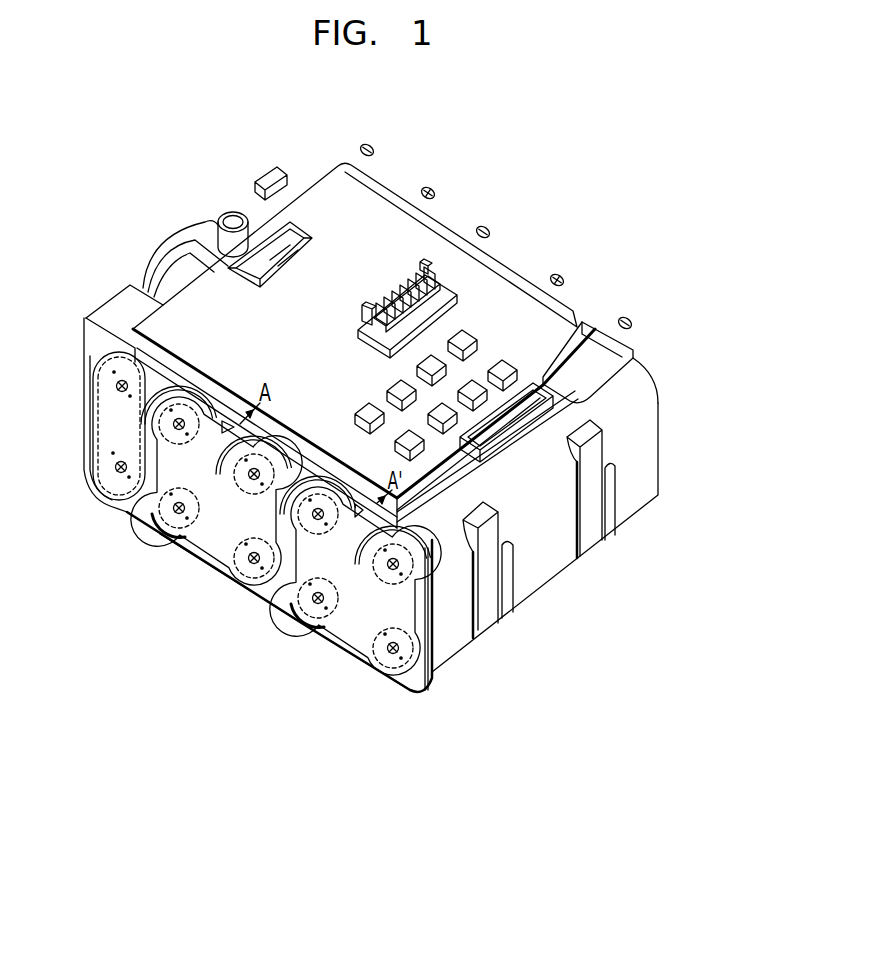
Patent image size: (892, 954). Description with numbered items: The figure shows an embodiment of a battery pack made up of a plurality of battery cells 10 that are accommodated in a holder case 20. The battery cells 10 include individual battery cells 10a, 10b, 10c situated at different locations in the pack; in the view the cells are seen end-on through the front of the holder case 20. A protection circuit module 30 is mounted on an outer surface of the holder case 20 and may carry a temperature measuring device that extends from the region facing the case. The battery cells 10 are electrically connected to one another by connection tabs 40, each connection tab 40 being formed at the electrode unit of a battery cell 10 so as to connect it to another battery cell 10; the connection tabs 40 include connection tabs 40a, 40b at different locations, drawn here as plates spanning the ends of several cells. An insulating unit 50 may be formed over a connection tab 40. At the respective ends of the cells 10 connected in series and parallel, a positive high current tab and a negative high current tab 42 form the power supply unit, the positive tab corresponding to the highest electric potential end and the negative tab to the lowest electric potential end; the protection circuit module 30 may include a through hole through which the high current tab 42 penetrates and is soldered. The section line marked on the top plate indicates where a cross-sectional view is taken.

The battery cells 10 is at (39, 596).
The battery cell 10a is at (367, 677).
The battery cell 10b is at (170, 547).
The battery cell 10c is at (117, 510).
The holder case 20 is at (655, 412).
The protection circuit module 30 is at (385, 228).
The connection tabs 40 is at (328, 730).
The connection tab 40a is at (365, 615).
The connection tab 40b is at (203, 513).
The high current tab 42 is at (597, 328).
The insulating unit 50 is at (423, 640).